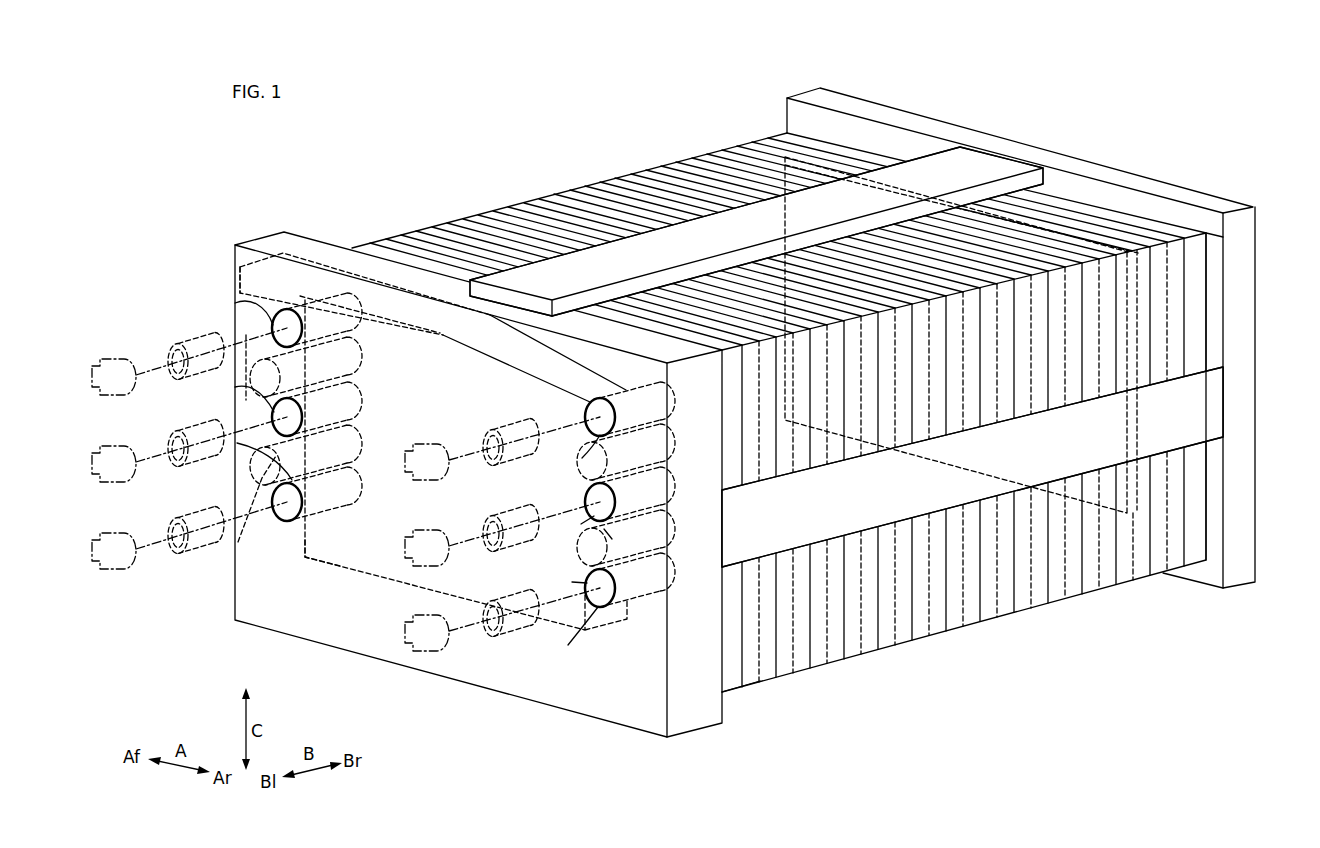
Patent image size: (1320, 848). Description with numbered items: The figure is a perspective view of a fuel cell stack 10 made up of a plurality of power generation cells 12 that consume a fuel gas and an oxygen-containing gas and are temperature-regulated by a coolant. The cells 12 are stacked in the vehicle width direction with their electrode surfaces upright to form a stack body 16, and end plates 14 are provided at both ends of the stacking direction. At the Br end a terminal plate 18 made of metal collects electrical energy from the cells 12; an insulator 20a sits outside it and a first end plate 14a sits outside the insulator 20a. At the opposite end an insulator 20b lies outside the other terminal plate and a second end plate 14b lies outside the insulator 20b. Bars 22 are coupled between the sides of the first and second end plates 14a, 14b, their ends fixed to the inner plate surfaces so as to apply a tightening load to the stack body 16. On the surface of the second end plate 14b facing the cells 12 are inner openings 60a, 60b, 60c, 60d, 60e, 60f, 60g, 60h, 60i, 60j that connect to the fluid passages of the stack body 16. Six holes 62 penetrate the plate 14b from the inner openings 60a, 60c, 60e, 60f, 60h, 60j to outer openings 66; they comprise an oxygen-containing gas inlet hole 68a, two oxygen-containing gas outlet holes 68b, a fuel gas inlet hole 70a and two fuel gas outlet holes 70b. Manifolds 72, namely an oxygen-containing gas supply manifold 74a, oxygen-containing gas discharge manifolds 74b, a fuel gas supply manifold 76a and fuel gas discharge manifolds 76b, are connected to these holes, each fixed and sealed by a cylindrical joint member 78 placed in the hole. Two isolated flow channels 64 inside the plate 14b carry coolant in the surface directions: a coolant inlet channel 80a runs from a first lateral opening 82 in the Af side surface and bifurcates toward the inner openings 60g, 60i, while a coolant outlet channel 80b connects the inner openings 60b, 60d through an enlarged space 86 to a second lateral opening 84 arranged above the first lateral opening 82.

The fuel cell stack 10 is at (370, 131).
The power generation cell 12 is at (578, 143).
The end plate 14 is at (745, 412).
The first end plate 14a is at (1132, 168).
The second end plate 14b is at (268, 226).
The stack body 16 is at (779, 401).
The terminal plate 18 is at (1145, 324).
The insulator 20a is at (1204, 538).
The insulator 20b is at (735, 675).
The bar 22 is at (997, 165).
The inner opening 60a is at (663, 401).
The inner opening 60b is at (663, 443).
The inner opening 60c is at (663, 487).
The inner opening 60d is at (663, 529).
The inner opening 60e is at (663, 573).
The inner opening 60f is at (348, 298).
The inner opening 60g is at (344, 358).
The inner opening 60h is at (344, 401).
The inner opening 60i is at (344, 443).
The inner opening 60j is at (344, 486).
The hole 62 is at (379, 469).
The flow channel 64 is at (396, 412).
The outer opening 66 is at (583, 560).
The oxygen-containing gas inlet hole 68a is at (571, 540).
The oxygen-containing gas outlet hole 68b is at (268, 308).
The fuel gas inlet hole 70a is at (258, 459).
The fuel gas outlet hole 70b is at (574, 563).
The manifold 72 is at (345, 512).
The oxygen-containing gas supply manifold 74a is at (418, 533).
The oxygen-containing gas discharge manifold 74b is at (126, 600).
The fuel gas supply manifold 76a is at (102, 446).
The fuel gas discharge manifold 76b is at (428, 690).
The joint member 78 is at (184, 336).
The coolant inlet channel 80a is at (238, 546).
The coolant outlet channel 80b is at (383, 300).
The first lateral opening 82 is at (244, 390).
The second lateral opening 84 is at (243, 288).
The enlarged space 86 is at (318, 549).